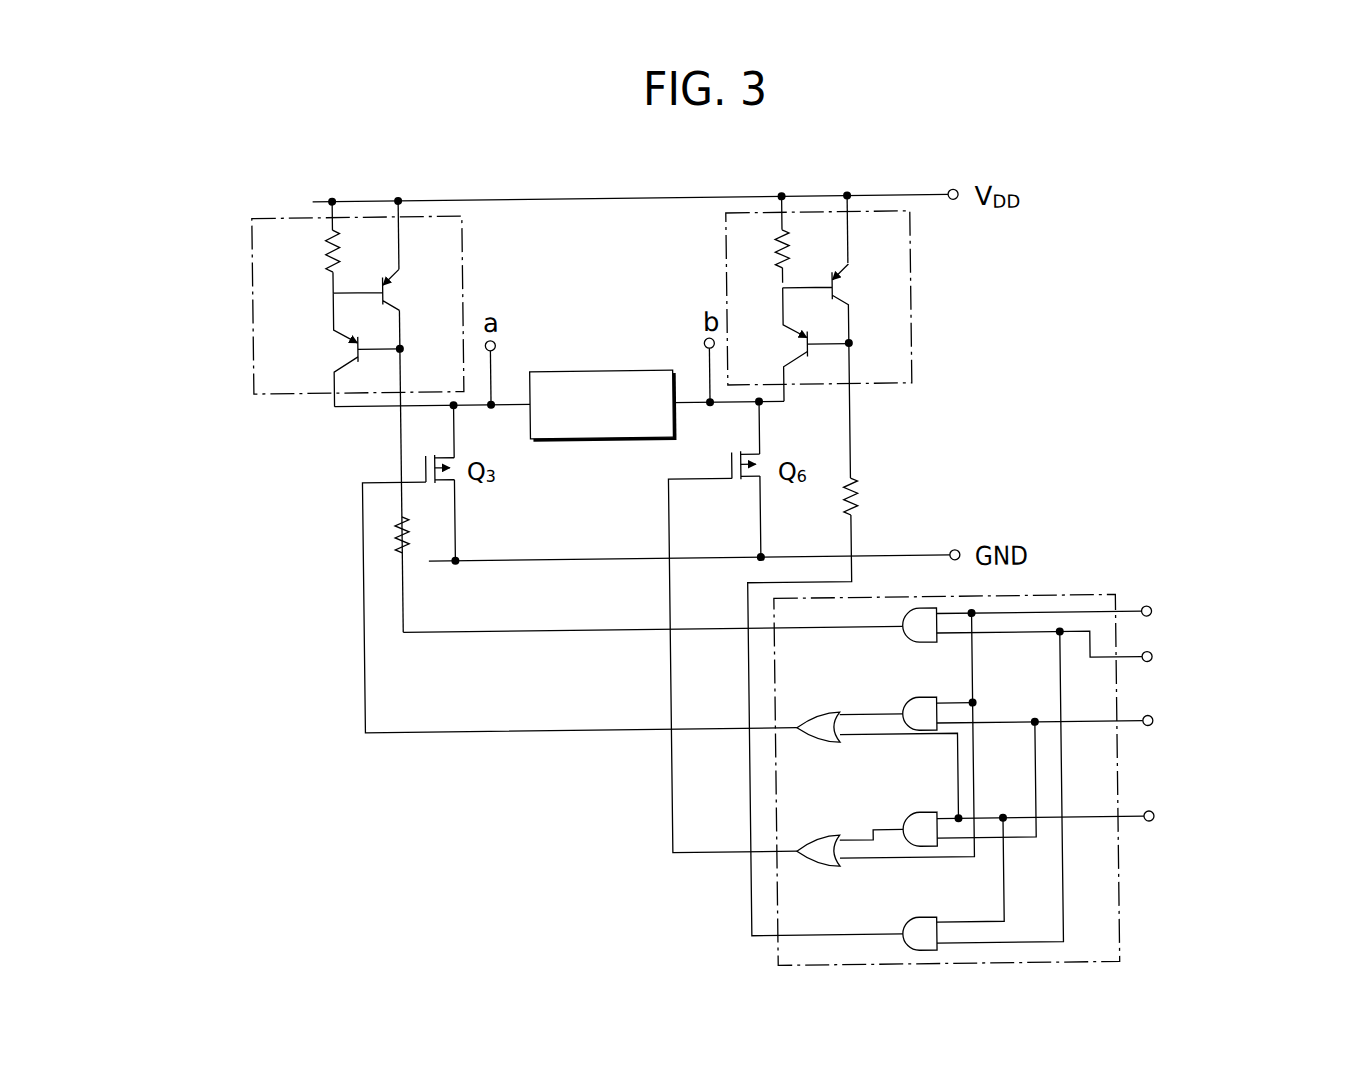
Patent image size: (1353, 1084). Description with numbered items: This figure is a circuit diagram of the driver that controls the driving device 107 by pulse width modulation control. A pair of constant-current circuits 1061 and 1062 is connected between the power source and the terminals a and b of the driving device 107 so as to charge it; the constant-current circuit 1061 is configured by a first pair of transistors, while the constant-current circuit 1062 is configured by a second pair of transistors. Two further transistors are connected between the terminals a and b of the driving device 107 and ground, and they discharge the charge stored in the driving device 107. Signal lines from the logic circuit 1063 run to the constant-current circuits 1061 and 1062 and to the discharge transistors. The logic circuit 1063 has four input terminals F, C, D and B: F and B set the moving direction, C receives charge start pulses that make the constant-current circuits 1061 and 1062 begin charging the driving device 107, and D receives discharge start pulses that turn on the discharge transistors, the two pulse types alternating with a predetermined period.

The driving device 107 is at (590, 441).
The constant-current circuit 1061 is at (253, 232).
The constant-current circuit 1062 is at (727, 228).
The logic circuit 1063 is at (1112, 927).